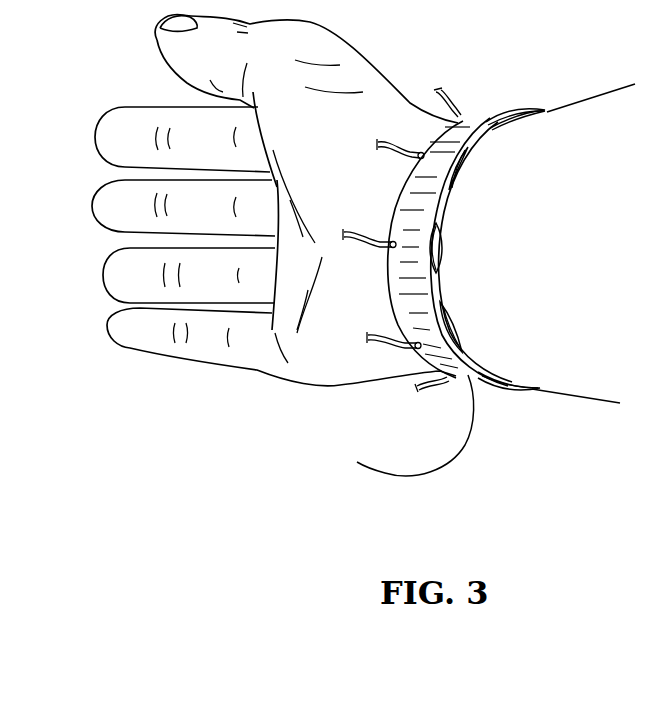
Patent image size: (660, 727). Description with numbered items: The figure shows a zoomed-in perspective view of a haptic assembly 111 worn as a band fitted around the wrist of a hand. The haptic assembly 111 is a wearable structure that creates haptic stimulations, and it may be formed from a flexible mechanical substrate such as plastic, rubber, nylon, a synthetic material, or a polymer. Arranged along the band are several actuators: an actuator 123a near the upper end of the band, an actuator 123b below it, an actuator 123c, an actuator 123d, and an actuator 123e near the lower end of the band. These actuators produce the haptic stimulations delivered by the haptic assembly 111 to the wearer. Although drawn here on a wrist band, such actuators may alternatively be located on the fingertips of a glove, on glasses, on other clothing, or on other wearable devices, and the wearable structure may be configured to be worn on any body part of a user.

The haptic assembly 111 is at (382, 425).
The actuator 123a is at (522, 118).
The actuator 123b is at (462, 165).
The actuator 123c is at (443, 254).
The actuator 123d is at (460, 328).
The actuator 123e is at (510, 385).